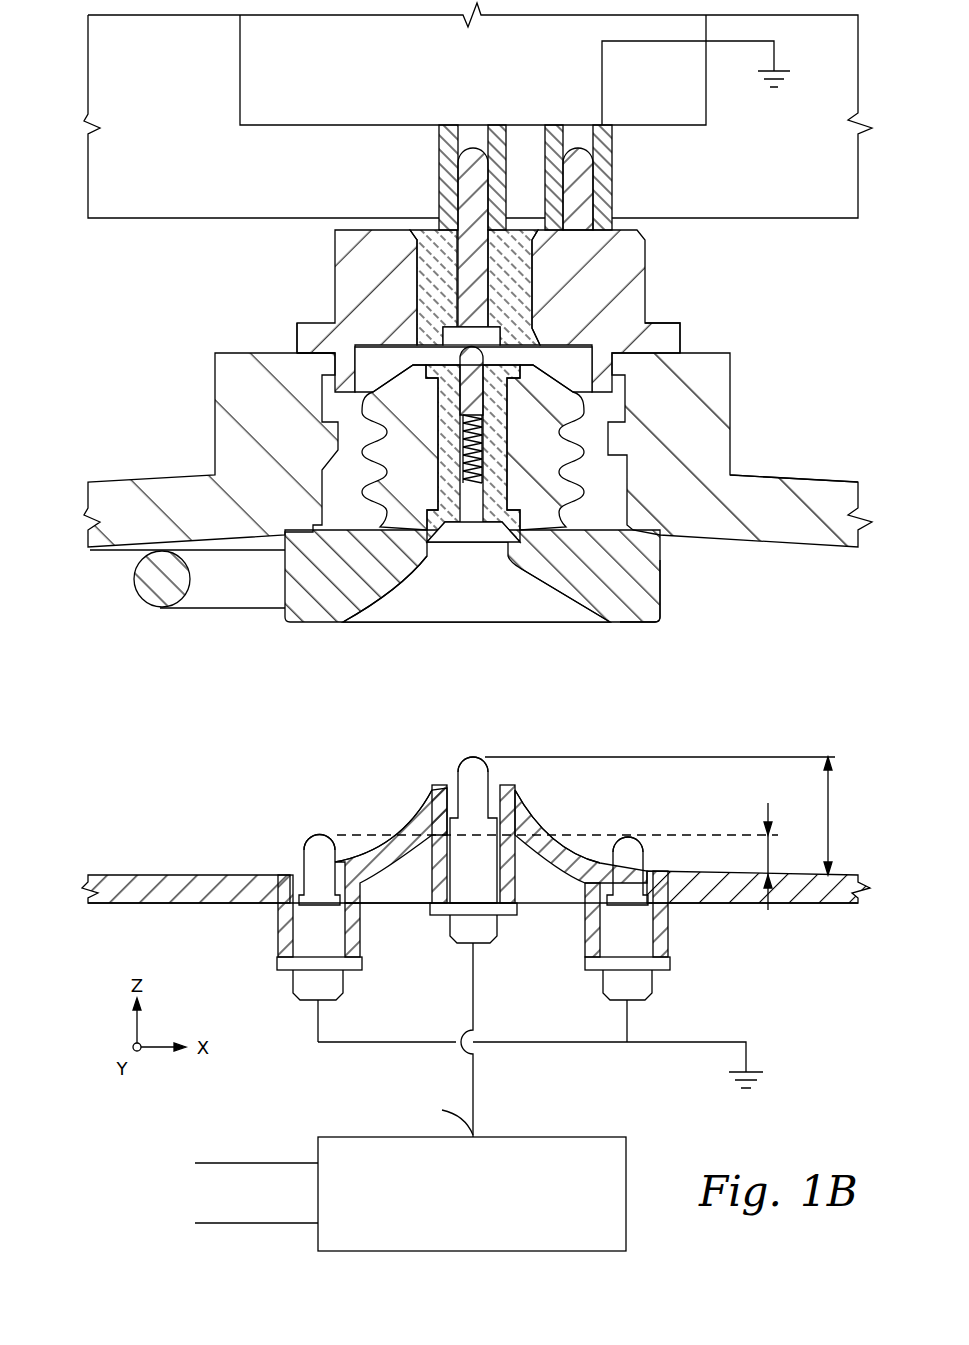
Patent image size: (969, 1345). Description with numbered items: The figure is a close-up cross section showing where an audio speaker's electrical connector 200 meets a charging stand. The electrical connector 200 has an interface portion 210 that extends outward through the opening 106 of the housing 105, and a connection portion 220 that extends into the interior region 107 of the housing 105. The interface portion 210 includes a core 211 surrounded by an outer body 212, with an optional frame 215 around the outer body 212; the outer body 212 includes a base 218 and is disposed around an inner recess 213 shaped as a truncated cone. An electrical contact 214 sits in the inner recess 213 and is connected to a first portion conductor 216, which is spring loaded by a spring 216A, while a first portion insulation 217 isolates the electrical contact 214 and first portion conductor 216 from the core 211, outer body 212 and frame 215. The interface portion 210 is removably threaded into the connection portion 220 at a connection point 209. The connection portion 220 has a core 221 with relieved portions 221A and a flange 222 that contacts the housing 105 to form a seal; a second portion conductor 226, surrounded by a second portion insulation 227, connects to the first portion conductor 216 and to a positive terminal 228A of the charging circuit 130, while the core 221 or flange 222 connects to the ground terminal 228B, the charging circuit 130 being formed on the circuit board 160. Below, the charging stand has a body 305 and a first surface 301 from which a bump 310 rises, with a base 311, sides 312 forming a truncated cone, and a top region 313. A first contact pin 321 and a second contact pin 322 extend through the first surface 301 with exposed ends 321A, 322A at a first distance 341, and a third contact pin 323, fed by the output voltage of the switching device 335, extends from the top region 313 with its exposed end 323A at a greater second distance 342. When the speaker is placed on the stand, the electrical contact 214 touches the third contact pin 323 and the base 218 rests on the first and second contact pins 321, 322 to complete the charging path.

The charging circuit 130 is at (240, 72).
The circuit board 160 is at (817, 220).
The positive terminal 228A is at (455, 143).
The second portion conductor 226 is at (473, 160).
The ground terminal 228B is at (557, 143).
The connection portion 220 is at (673, 266).
The flange 222 is at (297, 335).
The interior region 107 is at (195, 286).
The opening 106 is at (688, 313).
The second portion insulation 227 is at (430, 290).
The first portion conductor 216 is at (470, 350).
The core 221 is at (335, 246).
The relieved portions 221A is at (350, 410).
The core 211 is at (552, 403).
The spring 216A is at (500, 440).
The connection point 209 is at (623, 476).
The electrical connector 200 is at (673, 557).
The housing 105 is at (814, 552).
The frame 215 is at (207, 610).
The interface portion 210 is at (317, 634).
The inner recess 213 is at (440, 566).
The electrical contact 214 is at (472, 572).
The first portion insulation 217 is at (508, 545).
The outer body 212 is at (573, 585).
The base 218 is at (623, 622).
The first surface 301 is at (210, 875).
The bump 310 is at (565, 828).
The sides 312 is at (382, 840).
The top region 313 is at (510, 785).
The base 311 is at (390, 905).
The first contact pin 321 is at (300, 845).
The exposed end 321A is at (318, 833).
The third contact pin 323 is at (465, 765).
The exposed end 323A is at (472, 757).
The second contact pin 322 is at (638, 855).
The exposed end 322A is at (628, 837).
The second distance 342 is at (830, 818).
The first distance 341 is at (775, 858).
The body 305 is at (709, 937).
The switching device 335 is at (455, 1207).